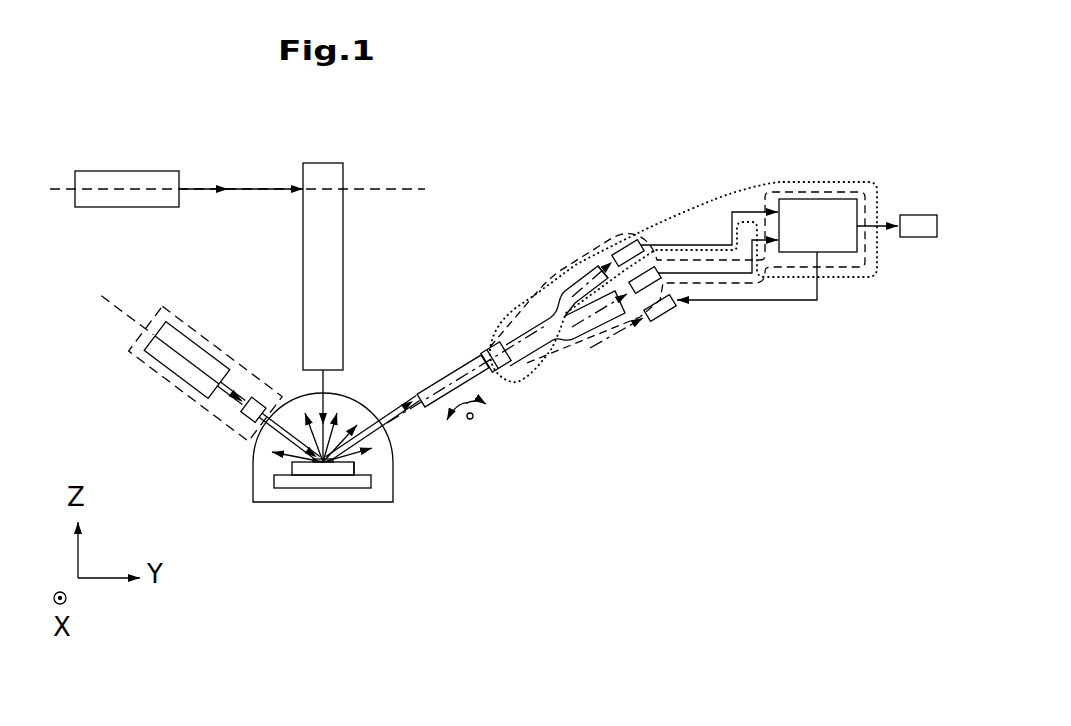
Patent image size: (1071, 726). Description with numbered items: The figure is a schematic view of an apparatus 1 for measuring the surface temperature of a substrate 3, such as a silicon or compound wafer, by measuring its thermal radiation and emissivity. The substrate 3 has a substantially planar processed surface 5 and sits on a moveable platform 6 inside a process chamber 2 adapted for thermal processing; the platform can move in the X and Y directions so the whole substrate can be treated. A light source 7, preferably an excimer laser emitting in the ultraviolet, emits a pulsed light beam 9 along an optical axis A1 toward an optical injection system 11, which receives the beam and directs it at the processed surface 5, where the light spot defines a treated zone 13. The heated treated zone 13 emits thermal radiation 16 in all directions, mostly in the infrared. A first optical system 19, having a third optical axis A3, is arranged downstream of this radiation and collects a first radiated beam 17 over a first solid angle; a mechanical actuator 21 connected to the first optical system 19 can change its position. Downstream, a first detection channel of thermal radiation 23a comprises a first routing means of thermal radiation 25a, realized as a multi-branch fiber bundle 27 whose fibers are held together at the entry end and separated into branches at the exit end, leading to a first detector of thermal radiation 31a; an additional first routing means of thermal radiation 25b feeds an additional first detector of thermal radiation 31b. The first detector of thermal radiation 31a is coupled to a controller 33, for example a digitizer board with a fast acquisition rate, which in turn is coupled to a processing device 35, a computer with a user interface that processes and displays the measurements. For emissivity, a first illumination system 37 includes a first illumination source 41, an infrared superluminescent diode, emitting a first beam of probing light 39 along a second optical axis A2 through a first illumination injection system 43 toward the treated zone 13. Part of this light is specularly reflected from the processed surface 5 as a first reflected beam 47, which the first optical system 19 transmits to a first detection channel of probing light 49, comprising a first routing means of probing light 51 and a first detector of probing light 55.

The apparatus 1 is at (518, 142).
The process chamber 2 is at (253, 490).
The substrate 3 is at (290, 468).
The processed surface 5 is at (363, 464).
The moveable platform 6 is at (302, 488).
The light source 7 is at (148, 180).
The pulsed light beam 9 is at (260, 188).
The optical injection system 11 is at (343, 267).
The treated zone 13 is at (333, 463).
The thermal radiation 16 is at (338, 420).
The first radiated beam 17 is at (393, 430).
The first optical system 19 is at (483, 346).
The mechanical actuator 21 is at (493, 427).
The first detection channel of thermal radiation 23a is at (716, 200).
The first routing means of thermal radiation 25a is at (573, 268).
The additional first routing means of thermal radiation 25b is at (607, 330).
The multi-branch fiber bundle 27 is at (525, 347).
The first detector of thermal radiation 31a is at (630, 247).
The additional first detector of thermal radiation 31b is at (668, 317).
The controller 33 is at (802, 213).
The processing device 35 is at (910, 223).
The first illumination system 37 is at (137, 349).
The first beam of probing light 39 is at (240, 366).
The first illumination source 41 is at (178, 327).
The first illumination injection system 43 is at (270, 393).
The first reflected beam 47 is at (419, 386).
The first detection channel of probing light 49 is at (568, 350).
The first routing means of probing light 51 is at (598, 303).
The first detector of probing light 55 is at (653, 273).
The optical axis A1 is at (383, 188).
The second optical axis A2 is at (121, 297).
The third optical axis A3 is at (432, 382).